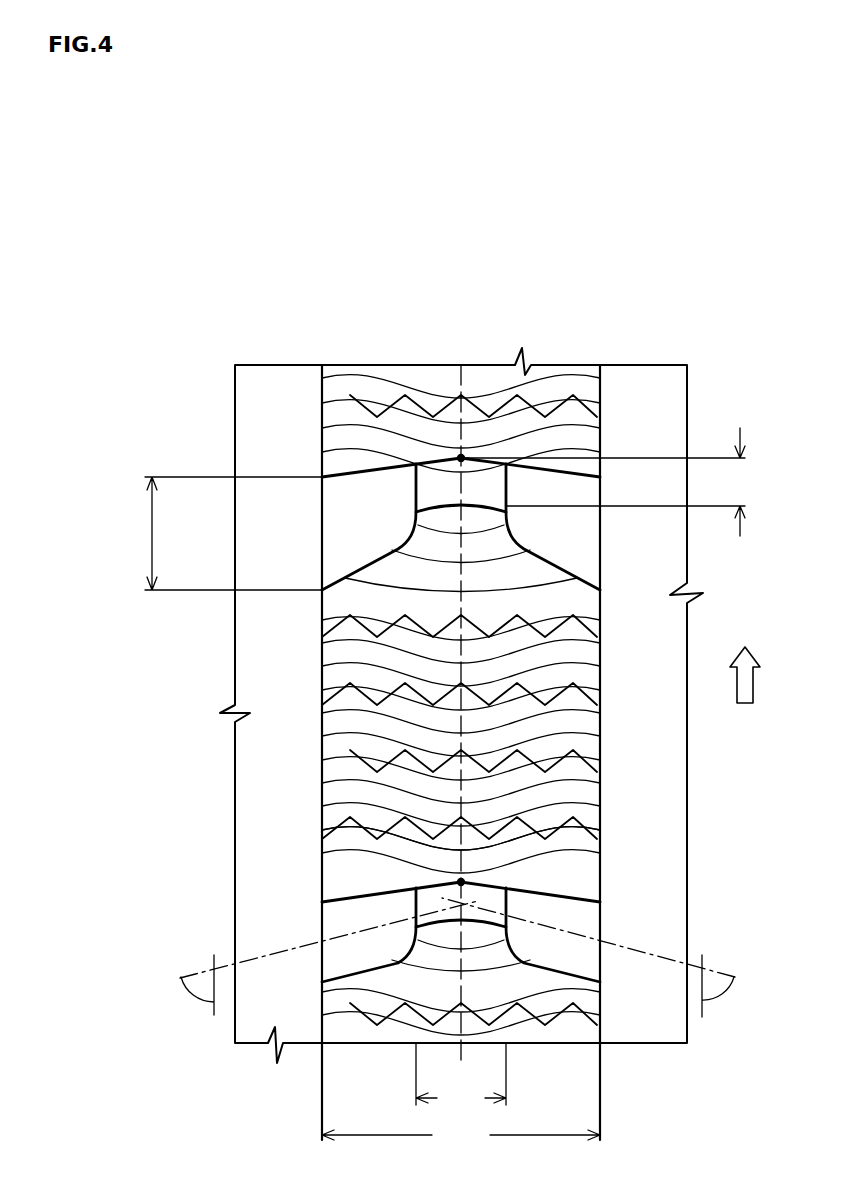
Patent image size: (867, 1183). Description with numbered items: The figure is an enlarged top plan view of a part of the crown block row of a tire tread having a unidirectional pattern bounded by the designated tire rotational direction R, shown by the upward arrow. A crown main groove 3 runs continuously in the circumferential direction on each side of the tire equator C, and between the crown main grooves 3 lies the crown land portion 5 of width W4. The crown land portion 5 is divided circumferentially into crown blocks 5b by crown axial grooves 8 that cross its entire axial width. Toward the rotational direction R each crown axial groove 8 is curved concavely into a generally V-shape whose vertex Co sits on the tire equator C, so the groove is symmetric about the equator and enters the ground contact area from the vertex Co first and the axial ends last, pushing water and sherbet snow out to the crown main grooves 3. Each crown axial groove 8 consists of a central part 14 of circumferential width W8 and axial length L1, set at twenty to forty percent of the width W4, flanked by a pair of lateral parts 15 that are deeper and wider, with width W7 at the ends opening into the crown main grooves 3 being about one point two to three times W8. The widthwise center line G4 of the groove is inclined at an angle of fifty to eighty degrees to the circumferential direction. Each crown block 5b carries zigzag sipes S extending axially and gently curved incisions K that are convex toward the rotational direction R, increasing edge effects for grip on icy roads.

The crown main groove 3 is at (281, 380).
The crown land portion 5 is at (581, 340).
The crown block 5b is at (355, 660).
The crown axial groove 8 is at (549, 243).
The central part 14 is at (443, 477).
The lateral part 15 is at (388, 498).
The vertex Co is at (462, 458).
The tire equator C is at (463, 365).
The sipe S is at (362, 748).
The incision K is at (350, 840).
The widthwise center line G4 is at (615, 943).
The groove width of lateral part W7 is at (227, 533).
The groove width of central part W8 is at (609, 482).
The axial length of central part L1 is at (461, 1077).
The width of crown land portion W4 is at (461, 1137).
The designated tire rotational direction R is at (752, 675).